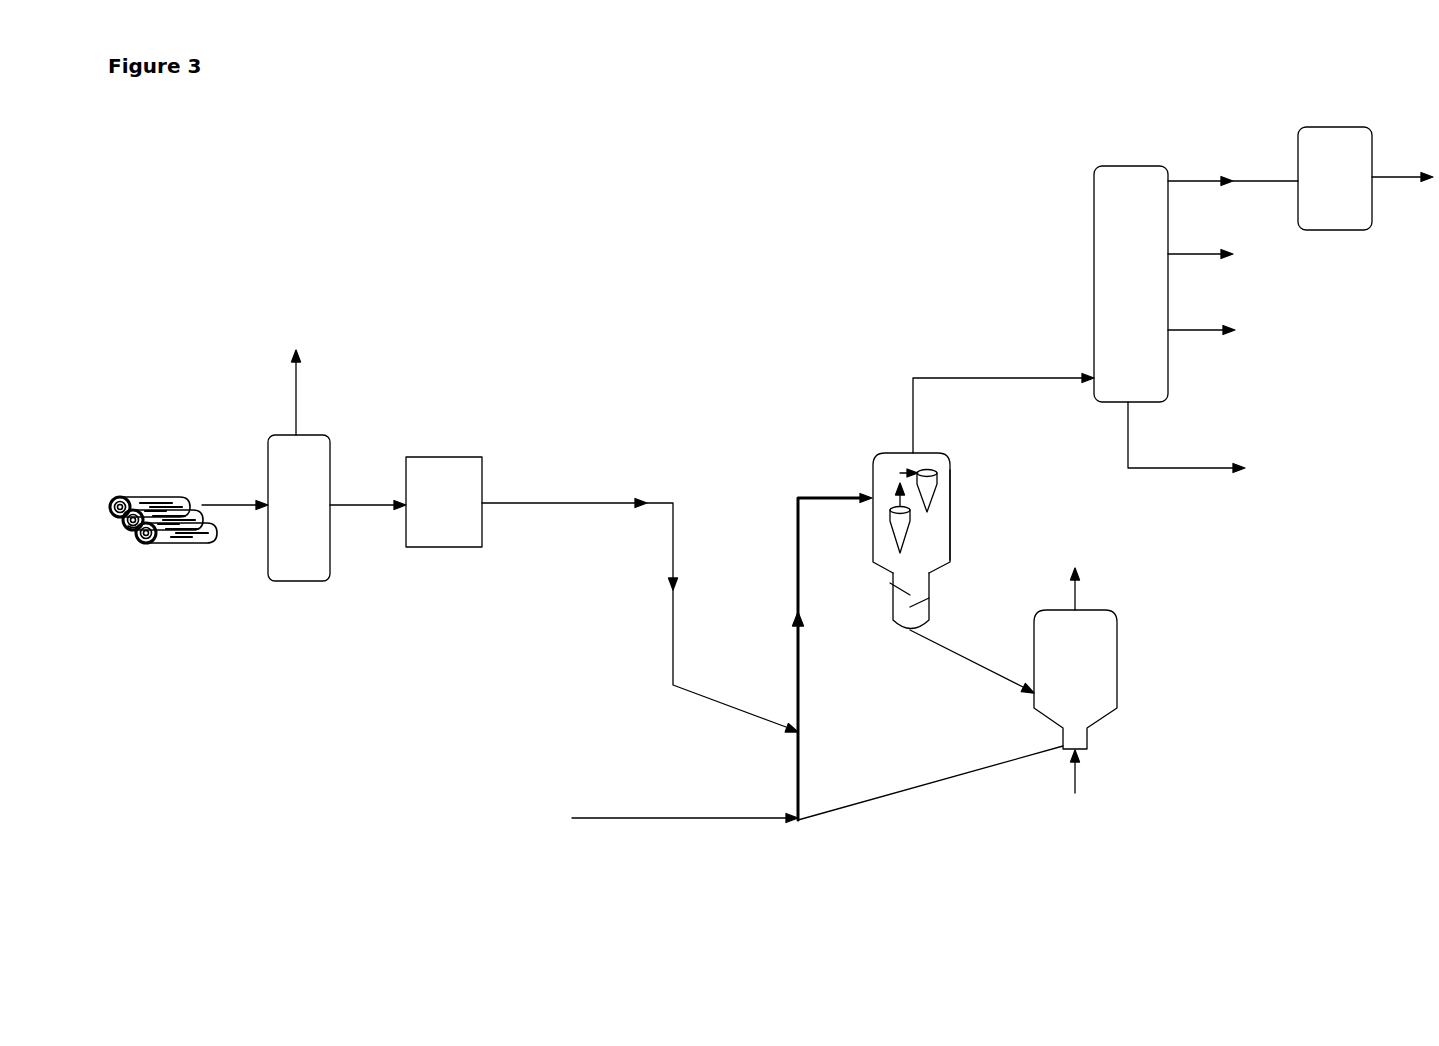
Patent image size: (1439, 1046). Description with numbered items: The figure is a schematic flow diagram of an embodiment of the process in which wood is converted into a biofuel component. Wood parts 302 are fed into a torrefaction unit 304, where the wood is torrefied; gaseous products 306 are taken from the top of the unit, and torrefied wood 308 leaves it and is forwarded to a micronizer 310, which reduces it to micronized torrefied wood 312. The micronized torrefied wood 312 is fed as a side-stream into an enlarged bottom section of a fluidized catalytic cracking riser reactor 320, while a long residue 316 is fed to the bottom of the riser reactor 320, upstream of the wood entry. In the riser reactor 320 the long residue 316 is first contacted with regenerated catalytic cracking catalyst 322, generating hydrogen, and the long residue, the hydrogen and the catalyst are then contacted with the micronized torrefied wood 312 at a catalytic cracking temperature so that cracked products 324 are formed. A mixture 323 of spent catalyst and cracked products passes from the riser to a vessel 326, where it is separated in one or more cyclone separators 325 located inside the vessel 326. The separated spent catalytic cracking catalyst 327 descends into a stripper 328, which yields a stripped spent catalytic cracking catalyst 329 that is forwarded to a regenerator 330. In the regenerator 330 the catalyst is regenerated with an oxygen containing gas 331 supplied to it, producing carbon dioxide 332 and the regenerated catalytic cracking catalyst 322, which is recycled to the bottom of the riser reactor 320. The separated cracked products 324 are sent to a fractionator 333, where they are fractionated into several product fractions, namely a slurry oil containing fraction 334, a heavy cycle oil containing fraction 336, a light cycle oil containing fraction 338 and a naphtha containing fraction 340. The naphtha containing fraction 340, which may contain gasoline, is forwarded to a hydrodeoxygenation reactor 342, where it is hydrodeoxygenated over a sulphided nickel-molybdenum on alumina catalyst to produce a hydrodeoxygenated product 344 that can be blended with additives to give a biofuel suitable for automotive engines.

The wood parts 302 is at (170, 553).
The torrefaction unit 304 is at (300, 581).
The gaseous products 306 is at (296, 380).
The torrefied wood 308 is at (380, 505).
The micronizer 310 is at (450, 547).
The micronized torrefied wood 312 is at (540, 505).
The long residue 316 is at (626, 815).
The fluidized catalytic cracking riser reactor 320 is at (795, 786).
The regenerated catalytic cracking catalyst 322 is at (905, 790).
The mixture comprising spent catalytic cracking catalyst and produced cracked produc 323 is at (872, 498).
The cracked products 324 is at (913, 400).
The cyclone separators 325 is at (937, 473).
The vessel 326 is at (950, 508).
The separated spent catalytic cracking catalyst 327 is at (900, 563).
The stripper 328 is at (929, 608).
The stripped spent catalytic cracking catalyst 329 is at (965, 663).
The regenerator 330 is at (1117, 645).
The oxygen containing gas 331 is at (1075, 765).
The carbon dioxide 332 is at (1075, 585).
The fractionator 333 is at (1094, 243).
The slurry oil containing fraction 334 is at (1207, 468).
The heavy cycle oil containing fraction 336 is at (1207, 330).
The light cycle oil containing fraction 338 is at (1207, 255).
The naphtha containing fraction 340 is at (1208, 182).
The hydrodeoxygenation reactor 342 is at (1338, 230).
The hydrodeoxygenated product 344 is at (1412, 178).